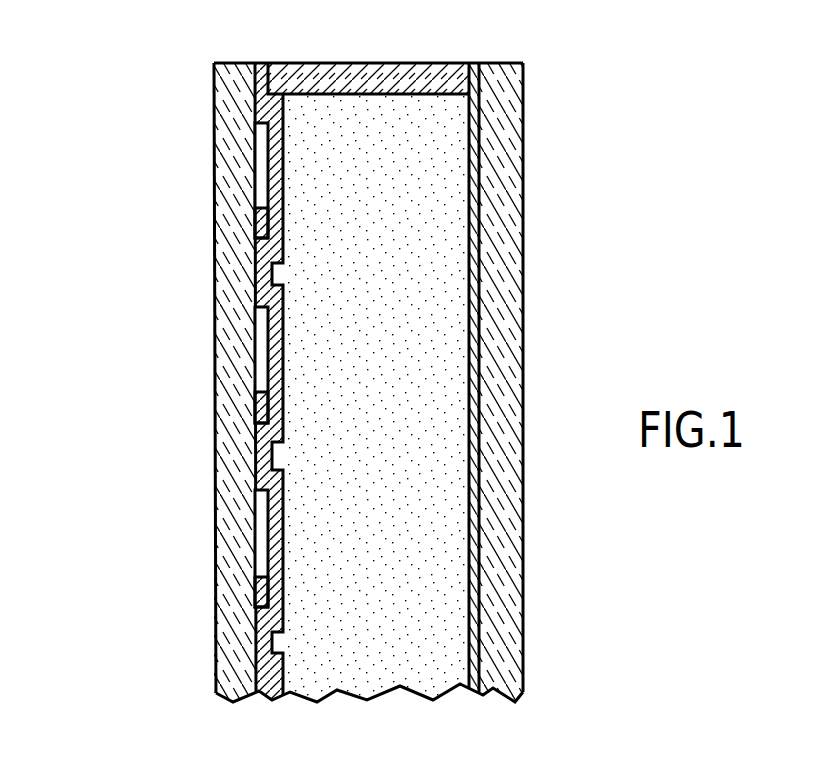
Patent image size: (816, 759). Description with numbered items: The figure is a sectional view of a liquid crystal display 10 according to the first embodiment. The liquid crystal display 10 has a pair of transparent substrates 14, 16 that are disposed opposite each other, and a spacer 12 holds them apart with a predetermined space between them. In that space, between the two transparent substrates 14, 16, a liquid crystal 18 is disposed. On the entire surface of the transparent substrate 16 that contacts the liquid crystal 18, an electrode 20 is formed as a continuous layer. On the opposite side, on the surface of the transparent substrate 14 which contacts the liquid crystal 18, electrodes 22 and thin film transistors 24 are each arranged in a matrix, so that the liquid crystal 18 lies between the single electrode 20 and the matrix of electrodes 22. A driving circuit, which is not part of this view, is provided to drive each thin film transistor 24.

The liquid crystal display 10 is at (72, 98).
The spacer 12 is at (378, 64).
The transparent substrate 14 is at (228, 632).
The transparent substrate 16 is at (508, 605).
The liquid crystal 18 is at (438, 172).
The electrode 20 is at (480, 370).
The electrodes 22 is at (258, 165).
The thin film transistor 24 is at (257, 228).